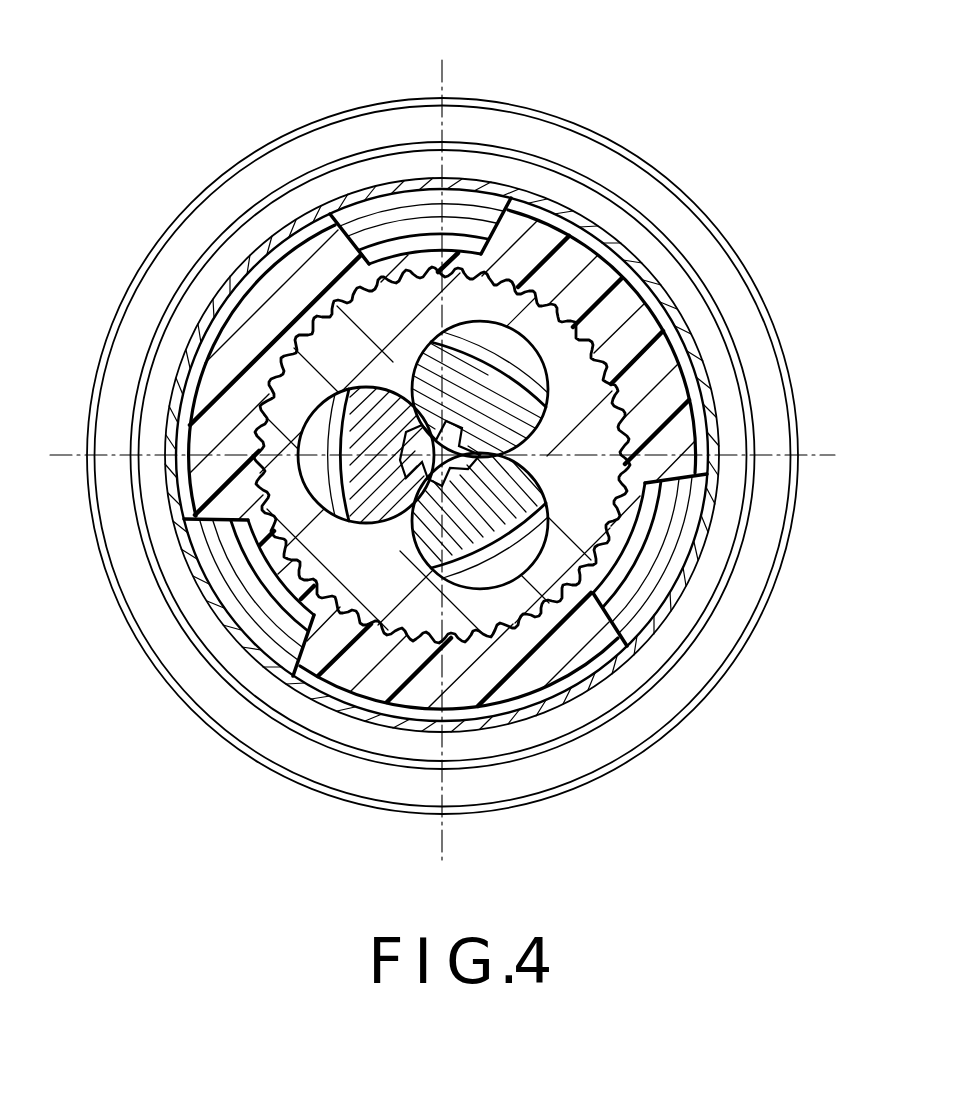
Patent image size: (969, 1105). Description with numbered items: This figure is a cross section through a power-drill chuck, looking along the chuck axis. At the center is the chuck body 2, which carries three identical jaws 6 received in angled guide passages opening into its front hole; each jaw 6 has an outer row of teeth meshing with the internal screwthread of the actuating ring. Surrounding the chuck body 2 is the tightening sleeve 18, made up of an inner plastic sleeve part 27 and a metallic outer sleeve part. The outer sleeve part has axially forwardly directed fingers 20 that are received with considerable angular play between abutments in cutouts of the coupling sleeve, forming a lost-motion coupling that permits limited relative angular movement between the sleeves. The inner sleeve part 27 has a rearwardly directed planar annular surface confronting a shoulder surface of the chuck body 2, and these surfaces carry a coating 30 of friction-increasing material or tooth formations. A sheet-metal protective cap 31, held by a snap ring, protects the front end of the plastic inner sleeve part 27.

The chuck body 2 is at (593, 428).
The jaws 6 is at (318, 512).
The tightening sleeve 18 is at (603, 153).
The fingers 20 is at (378, 214).
The inner plastic sleeve part 27 is at (650, 353).
The coating 30 is at (253, 357).
The protective cap 31 is at (705, 540).